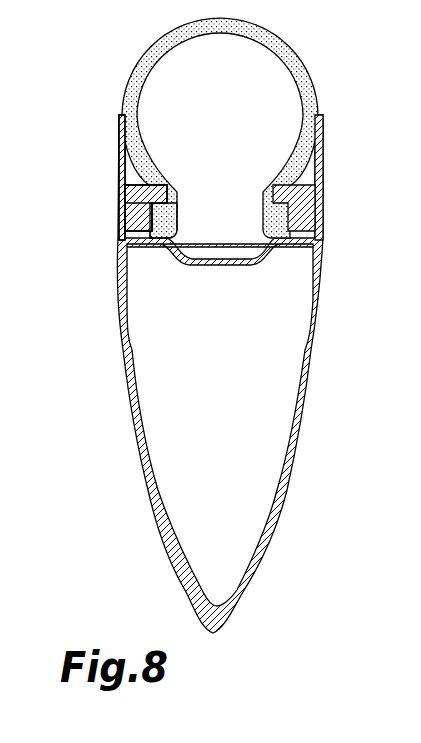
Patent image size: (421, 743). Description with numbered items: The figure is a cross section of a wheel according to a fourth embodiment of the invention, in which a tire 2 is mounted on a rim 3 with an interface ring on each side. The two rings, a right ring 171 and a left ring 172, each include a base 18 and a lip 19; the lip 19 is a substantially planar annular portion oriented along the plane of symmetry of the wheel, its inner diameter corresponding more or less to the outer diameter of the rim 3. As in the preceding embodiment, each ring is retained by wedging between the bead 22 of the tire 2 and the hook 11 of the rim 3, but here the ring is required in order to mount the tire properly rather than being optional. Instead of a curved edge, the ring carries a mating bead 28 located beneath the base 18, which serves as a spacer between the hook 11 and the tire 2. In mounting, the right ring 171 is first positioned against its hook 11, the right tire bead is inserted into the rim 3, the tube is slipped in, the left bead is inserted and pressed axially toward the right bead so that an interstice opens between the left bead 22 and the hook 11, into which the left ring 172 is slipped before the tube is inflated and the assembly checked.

The tire 2 is at (302, 69).
The rim 3 is at (321, 293).
The hook 11 is at (133, 222).
The base 18 is at (127, 176).
The lip 19 is at (122, 137).
The bead 22 is at (162, 226).
The mating bead 28 is at (128, 204).
The right ring 171 is at (322, 182).
The left ring 172 is at (88, 97).